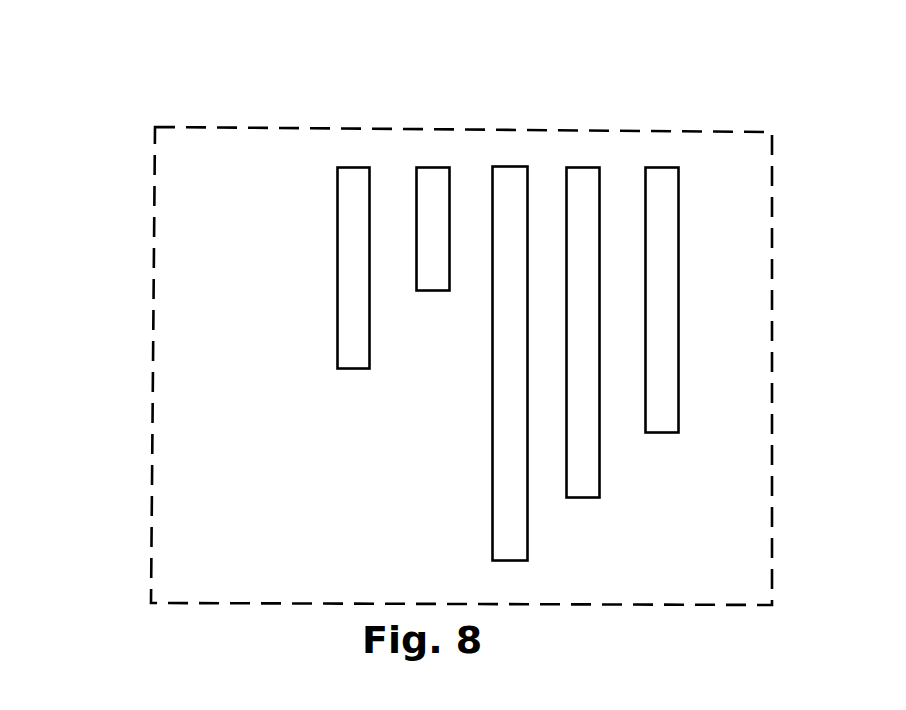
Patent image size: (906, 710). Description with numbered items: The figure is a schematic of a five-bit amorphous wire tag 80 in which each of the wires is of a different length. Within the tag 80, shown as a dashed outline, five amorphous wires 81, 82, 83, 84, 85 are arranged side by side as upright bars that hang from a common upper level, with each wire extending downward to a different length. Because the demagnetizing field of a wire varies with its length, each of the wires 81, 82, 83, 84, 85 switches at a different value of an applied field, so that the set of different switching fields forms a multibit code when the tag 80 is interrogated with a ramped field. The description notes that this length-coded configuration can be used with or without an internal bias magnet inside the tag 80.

The amorphous wire tag 80 is at (118, 126).
The amorphous wire 81 is at (667, 167).
The amorphous wire 82 is at (588, 167).
The amorphous wire 83 is at (512, 563).
The amorphous wire 84 is at (437, 167).
The amorphous wire 85 is at (360, 167).